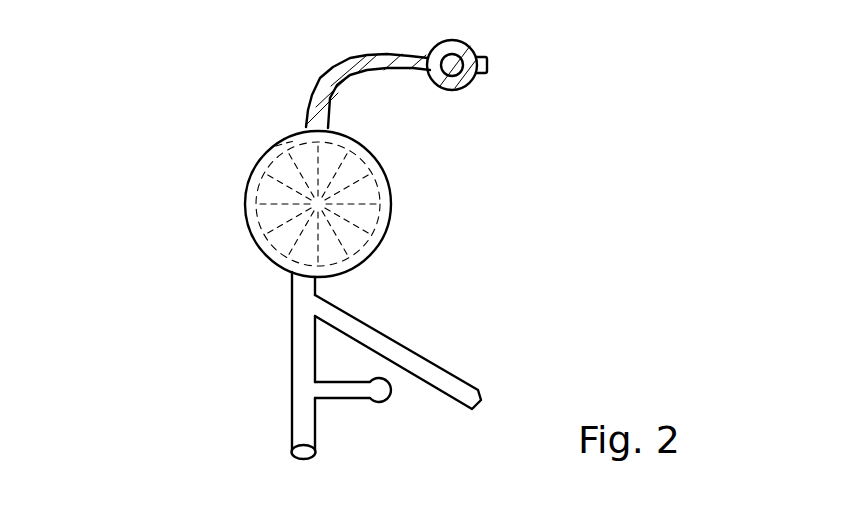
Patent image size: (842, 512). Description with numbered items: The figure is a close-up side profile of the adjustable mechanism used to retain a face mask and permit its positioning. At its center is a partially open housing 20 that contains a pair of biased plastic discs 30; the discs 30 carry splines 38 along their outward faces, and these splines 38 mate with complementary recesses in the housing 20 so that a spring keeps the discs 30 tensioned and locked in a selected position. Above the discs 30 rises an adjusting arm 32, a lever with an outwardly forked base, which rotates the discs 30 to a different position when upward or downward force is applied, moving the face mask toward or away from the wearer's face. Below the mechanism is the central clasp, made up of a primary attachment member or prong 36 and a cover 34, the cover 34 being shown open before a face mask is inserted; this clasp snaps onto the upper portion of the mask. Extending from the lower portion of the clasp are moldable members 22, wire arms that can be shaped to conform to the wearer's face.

The housing 20 is at (245, 180).
The moldable members 22 is at (292, 450).
The biased plastic discs 30 is at (395, 167).
The adjusting arm 32 is at (476, 51).
The cover 34 is at (396, 340).
The primary attachment member/prong 36 is at (380, 387).
The splines 38 is at (268, 146).